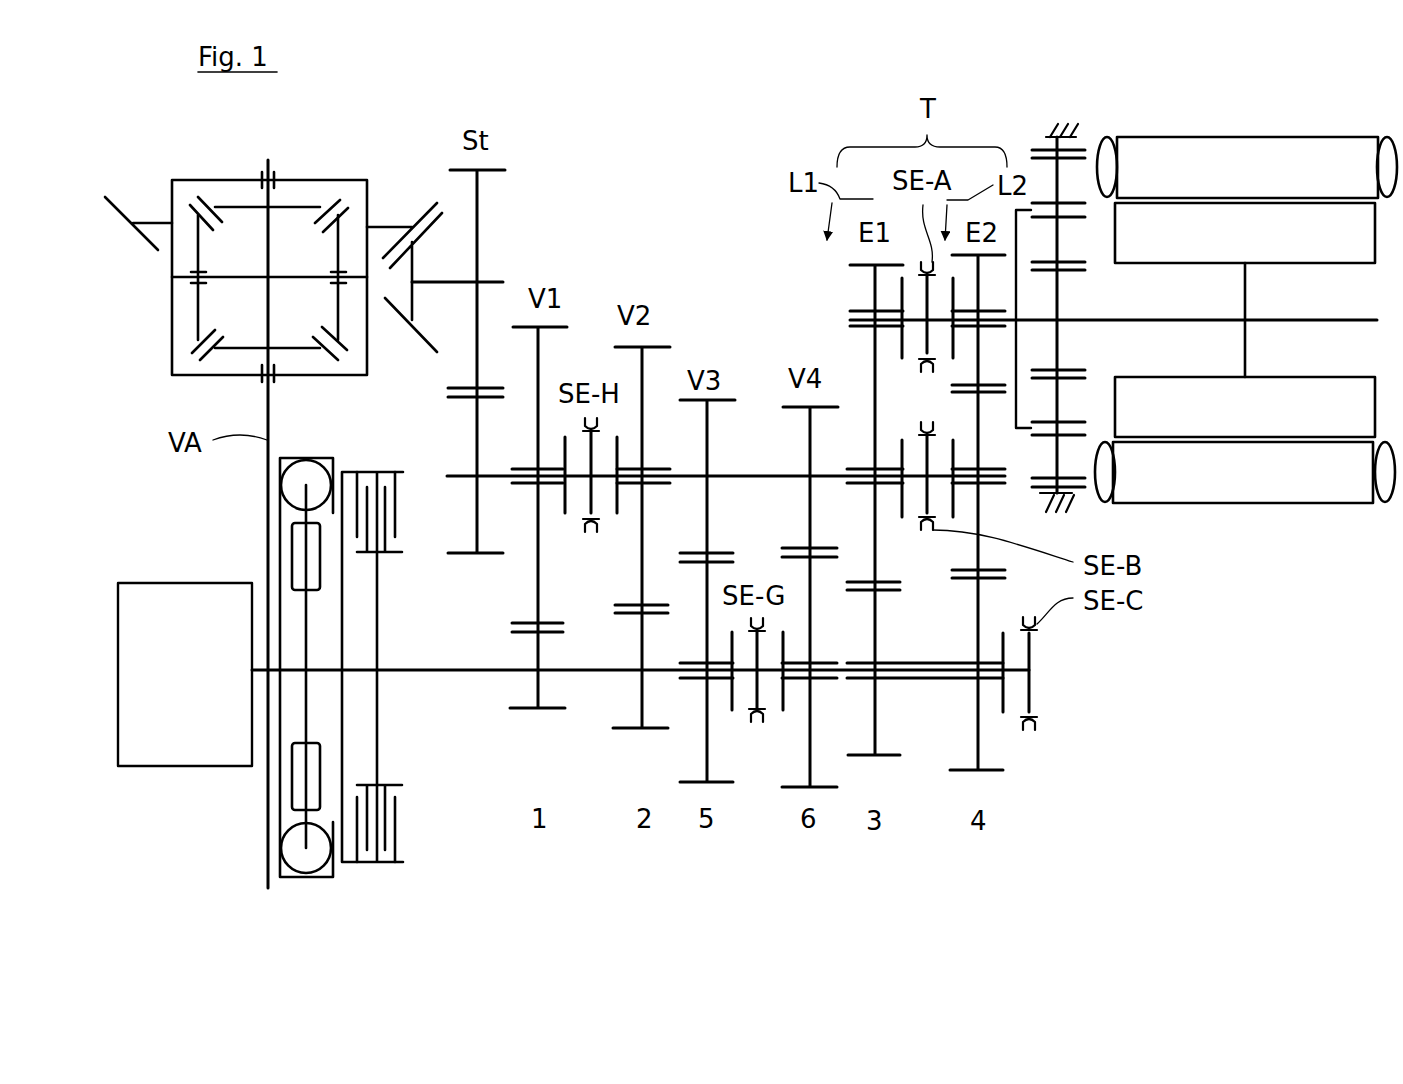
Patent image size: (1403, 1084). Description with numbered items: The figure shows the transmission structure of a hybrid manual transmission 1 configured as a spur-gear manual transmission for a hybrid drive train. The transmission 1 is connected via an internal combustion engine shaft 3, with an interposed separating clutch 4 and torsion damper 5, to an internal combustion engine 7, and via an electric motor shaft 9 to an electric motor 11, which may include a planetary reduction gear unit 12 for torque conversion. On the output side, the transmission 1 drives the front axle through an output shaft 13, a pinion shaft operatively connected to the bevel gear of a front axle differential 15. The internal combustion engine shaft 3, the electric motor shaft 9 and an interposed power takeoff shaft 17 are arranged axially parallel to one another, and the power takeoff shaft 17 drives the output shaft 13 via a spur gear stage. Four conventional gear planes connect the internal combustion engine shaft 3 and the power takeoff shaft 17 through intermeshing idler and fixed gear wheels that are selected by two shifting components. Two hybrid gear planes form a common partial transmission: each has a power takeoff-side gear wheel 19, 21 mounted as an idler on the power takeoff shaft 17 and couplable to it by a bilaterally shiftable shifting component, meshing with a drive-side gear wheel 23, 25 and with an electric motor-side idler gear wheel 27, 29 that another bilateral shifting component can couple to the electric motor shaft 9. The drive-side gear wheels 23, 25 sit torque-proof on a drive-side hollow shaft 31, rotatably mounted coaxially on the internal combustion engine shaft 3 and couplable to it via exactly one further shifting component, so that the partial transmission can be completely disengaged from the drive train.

The manual transmission 1 is at (744, 208).
The internal combustion engine shaft 3 is at (459, 673).
The separating clutch 4 is at (382, 863).
The torsion damper 5 is at (305, 878).
The internal combustion engine 7 is at (190, 681).
The electric motor shaft 9 is at (1010, 323).
The electric motor 11 is at (1180, 137).
The planetary reduction gear unit 12 is at (1055, 185).
The output shaft 13 is at (490, 280).
The front axle differential 15 is at (310, 180).
The power takeoff shaft 17 is at (458, 470).
The power takeoff-side gear wheel 19 is at (927, 456).
The power takeoff-side gear wheel 21 is at (975, 550).
The drive-side gear wheel 23 is at (855, 757).
The drive-side gear wheel 25 is at (982, 772).
The electric motor-side idler gear wheel 27 is at (875, 296).
The electric motor-side idler gear wheel 29 is at (927, 352).
The drive-side hollow shaft 31 is at (927, 683).